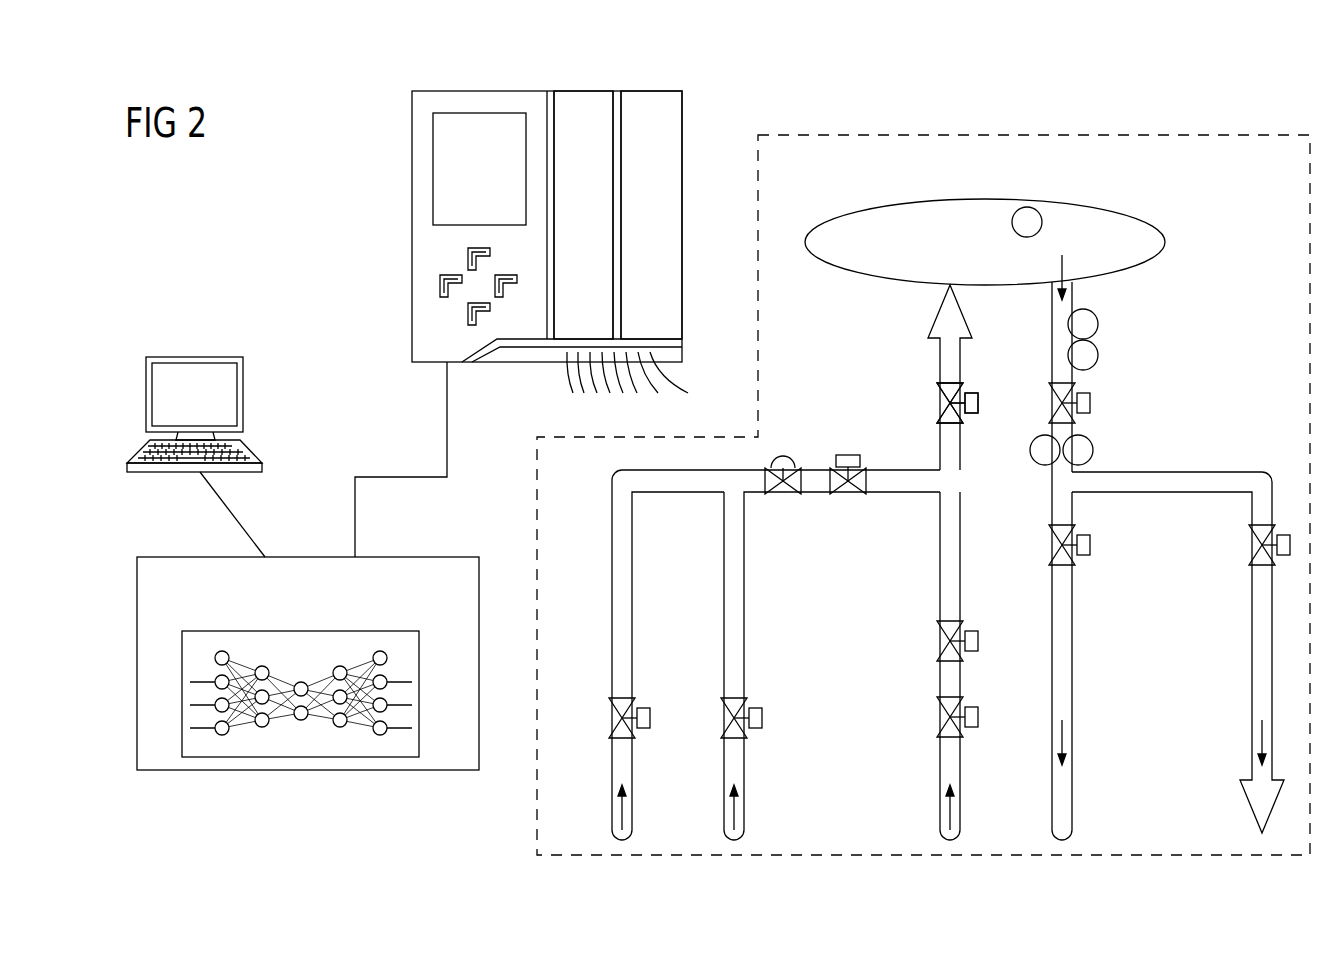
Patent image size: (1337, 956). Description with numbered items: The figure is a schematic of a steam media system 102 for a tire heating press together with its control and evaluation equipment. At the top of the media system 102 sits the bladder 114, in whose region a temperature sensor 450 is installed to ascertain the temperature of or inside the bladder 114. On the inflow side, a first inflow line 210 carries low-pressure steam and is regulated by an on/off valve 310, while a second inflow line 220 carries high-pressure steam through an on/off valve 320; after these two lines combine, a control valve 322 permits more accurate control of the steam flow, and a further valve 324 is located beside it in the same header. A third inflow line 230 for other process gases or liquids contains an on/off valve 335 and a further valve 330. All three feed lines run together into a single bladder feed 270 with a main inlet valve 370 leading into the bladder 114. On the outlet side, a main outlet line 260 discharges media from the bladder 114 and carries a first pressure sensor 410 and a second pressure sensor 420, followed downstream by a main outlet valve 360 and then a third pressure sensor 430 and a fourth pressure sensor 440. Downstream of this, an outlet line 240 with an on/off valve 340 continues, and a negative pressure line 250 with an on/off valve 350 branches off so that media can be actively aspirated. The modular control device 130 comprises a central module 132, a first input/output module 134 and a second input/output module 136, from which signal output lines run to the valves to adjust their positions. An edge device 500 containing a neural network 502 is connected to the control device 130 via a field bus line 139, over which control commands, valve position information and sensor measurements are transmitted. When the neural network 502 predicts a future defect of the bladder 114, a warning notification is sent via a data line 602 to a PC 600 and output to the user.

The steam media system 102 is at (537, 834).
The bladder 114 is at (1158, 240).
The control device 130 is at (531, 259).
The central module 132 is at (461, 185).
The first input/output module 134 is at (565, 185).
The second input/output module 136 is at (631, 185).
The field bus line 139 is at (381, 474).
The first inflow line 210 is at (620, 763).
The second inflow line 220 is at (733, 763).
The third inflow line 230 is at (950, 763).
The outlet line 240 is at (1066, 631).
The negative pressure line 250 is at (1262, 612).
The main outlet line 260 is at (1052, 330).
The bladder feed 270 is at (940, 321).
The on/off valve 310 is at (616, 710).
The on/off valve 320 is at (728, 710).
The control valve 322 is at (792, 497).
The valve 324 is at (857, 497).
The valve 330 is at (944, 636).
The on/off valve 335 is at (944, 709).
The on/off valve 340 is at (1066, 533).
The on/off valve 350 is at (1258, 541).
The main outlet valve 360 is at (1072, 393).
The main inlet valve 370 is at (938, 395).
The first pressure sensor 410 is at (1099, 325).
The second pressure sensor 420 is at (1099, 356).
The third pressure sensor 430 is at (1033, 460).
The fourth pressure sensor 440 is at (1094, 448).
The temperature sensor 450 is at (1031, 207).
The edge device 500 is at (153, 597).
The neural network 502 is at (281, 663).
The PC 600 is at (175, 405).
The data line 602 is at (232, 513).